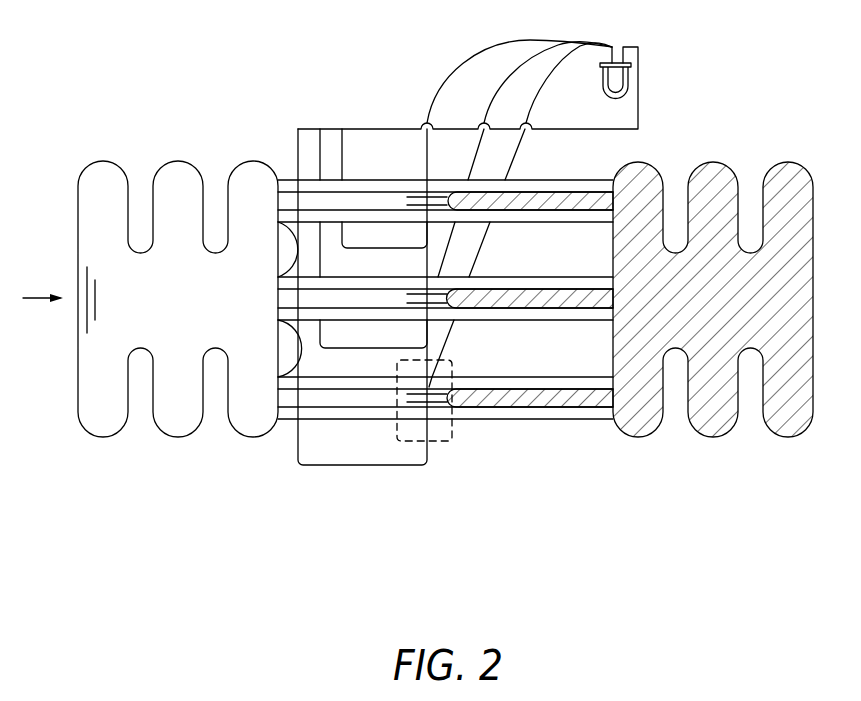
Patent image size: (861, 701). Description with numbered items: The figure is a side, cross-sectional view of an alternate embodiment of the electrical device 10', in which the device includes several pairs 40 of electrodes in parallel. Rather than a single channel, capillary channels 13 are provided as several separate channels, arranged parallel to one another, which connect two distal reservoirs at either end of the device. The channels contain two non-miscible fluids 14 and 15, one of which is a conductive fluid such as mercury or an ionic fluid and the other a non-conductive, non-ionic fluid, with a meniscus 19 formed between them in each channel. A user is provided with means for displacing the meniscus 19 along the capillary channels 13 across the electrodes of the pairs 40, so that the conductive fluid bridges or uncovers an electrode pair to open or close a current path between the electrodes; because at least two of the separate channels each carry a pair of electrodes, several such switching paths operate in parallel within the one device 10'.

The capillary channel 13 is at (290, 197).
The non-miscible fluid 14 is at (708, 170).
The non-miscible fluid 15 is at (182, 170).
The meniscus 19 is at (458, 199).
The pairs of electrodes 40 is at (395, 432).
The electrical device 10' is at (636, 503).